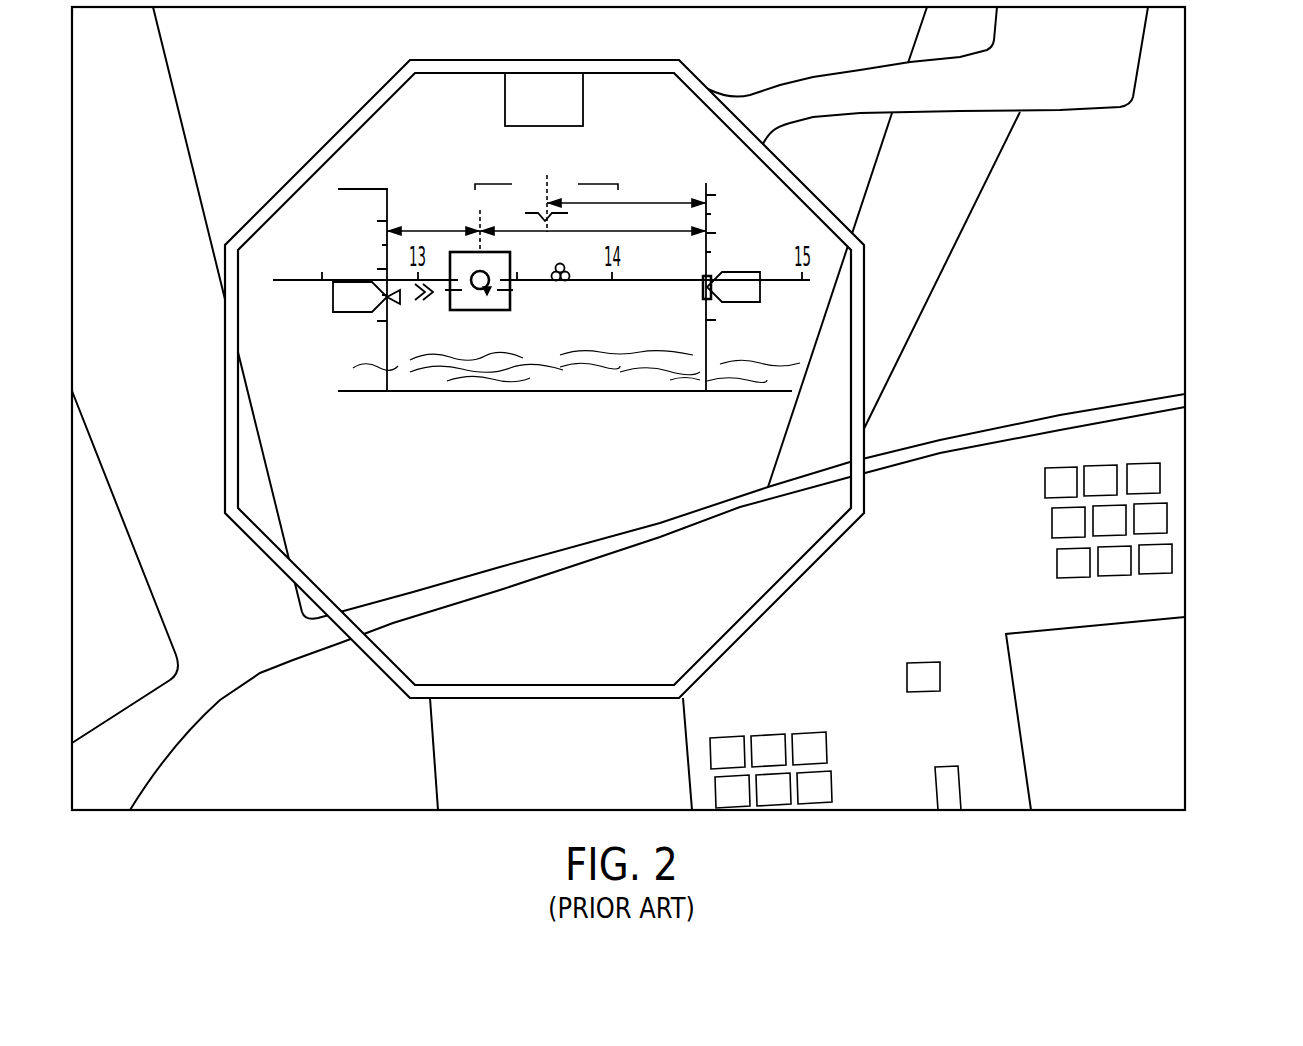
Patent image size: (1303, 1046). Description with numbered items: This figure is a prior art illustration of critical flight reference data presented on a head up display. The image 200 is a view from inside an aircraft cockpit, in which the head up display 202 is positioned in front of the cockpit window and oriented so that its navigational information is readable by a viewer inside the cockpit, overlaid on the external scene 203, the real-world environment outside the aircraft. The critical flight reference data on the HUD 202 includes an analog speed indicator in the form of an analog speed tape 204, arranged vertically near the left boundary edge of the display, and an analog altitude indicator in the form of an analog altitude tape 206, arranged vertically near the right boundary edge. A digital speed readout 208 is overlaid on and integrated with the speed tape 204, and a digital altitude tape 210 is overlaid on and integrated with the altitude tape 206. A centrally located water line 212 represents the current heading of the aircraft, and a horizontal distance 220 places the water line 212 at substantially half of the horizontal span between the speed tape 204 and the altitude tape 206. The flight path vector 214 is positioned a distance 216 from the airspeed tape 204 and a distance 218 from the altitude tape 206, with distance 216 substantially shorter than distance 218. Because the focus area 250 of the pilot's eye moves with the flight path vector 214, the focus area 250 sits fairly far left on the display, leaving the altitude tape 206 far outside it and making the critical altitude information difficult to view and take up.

The image 200 is at (1186, 150).
The head up display 202 is at (567, 98).
The external scene 203 is at (139, 640).
The analog speed tape 204 is at (372, 187).
The analog altitude tape 206 is at (703, 183).
The digital speed readout 208 is at (333, 297).
The digital altitude tape 210 is at (760, 290).
The water line 212 is at (545, 221).
The flight path vector 214 is at (473, 290).
The distance 216 is at (416, 228).
The distance 218 is at (637, 234).
The horizontal distance 220 is at (647, 204).
The focus area 250 is at (510, 302).